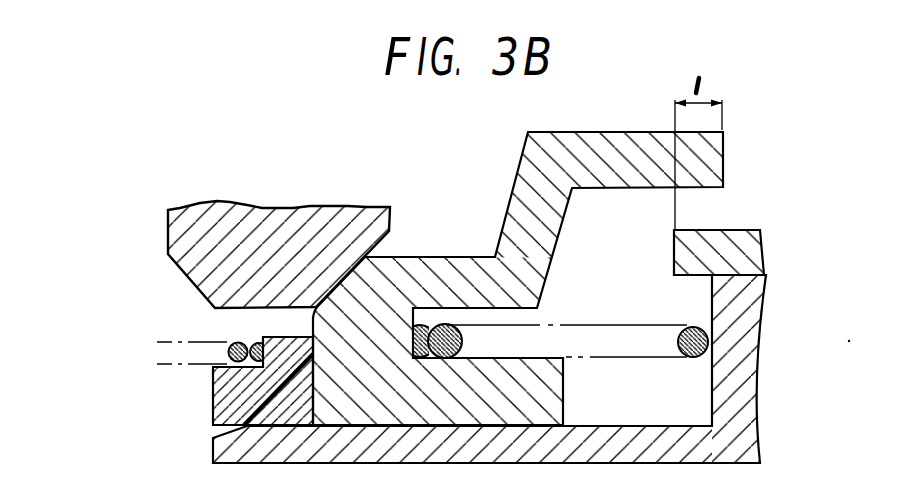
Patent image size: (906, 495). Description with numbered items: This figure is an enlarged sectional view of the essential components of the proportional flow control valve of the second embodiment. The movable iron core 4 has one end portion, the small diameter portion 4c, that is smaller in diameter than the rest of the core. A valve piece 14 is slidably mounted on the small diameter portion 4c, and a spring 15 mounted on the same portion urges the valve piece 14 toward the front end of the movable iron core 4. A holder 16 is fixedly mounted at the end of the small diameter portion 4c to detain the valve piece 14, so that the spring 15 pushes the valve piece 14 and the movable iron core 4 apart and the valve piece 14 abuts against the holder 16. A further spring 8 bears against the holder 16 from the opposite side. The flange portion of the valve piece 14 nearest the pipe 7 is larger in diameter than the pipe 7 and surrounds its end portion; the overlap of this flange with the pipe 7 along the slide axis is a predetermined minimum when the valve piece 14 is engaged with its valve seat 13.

The movable iron core 4 is at (473, 371).
The small diameter portion 4c is at (225, 446).
The pipe 7 is at (737, 237).
The spring 8 is at (230, 343).
The valve seat 13 is at (390, 222).
The valve piece 14 is at (533, 146).
The spring 15 is at (687, 327).
The holder 16 is at (225, 397).